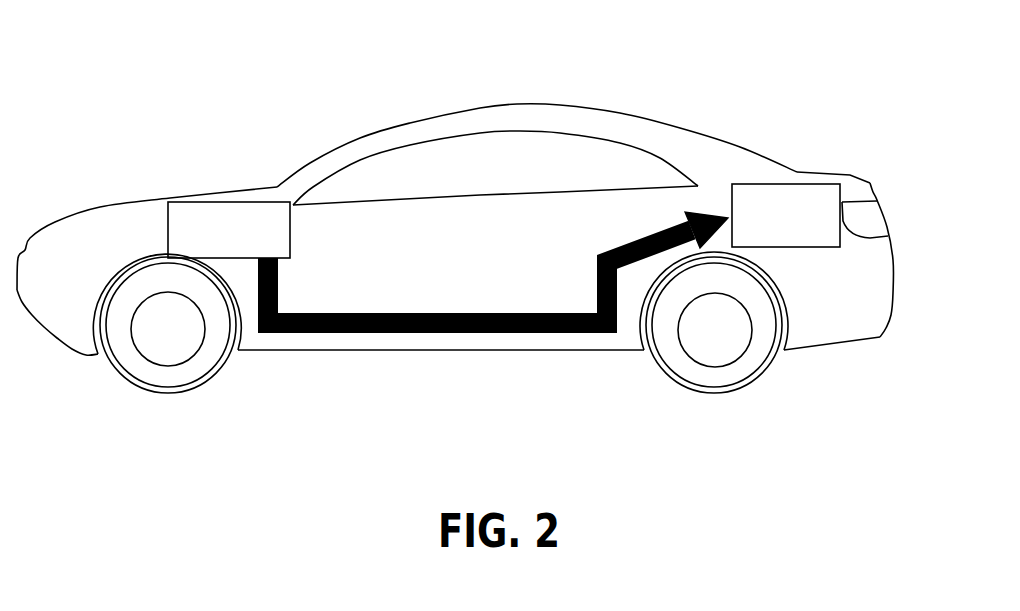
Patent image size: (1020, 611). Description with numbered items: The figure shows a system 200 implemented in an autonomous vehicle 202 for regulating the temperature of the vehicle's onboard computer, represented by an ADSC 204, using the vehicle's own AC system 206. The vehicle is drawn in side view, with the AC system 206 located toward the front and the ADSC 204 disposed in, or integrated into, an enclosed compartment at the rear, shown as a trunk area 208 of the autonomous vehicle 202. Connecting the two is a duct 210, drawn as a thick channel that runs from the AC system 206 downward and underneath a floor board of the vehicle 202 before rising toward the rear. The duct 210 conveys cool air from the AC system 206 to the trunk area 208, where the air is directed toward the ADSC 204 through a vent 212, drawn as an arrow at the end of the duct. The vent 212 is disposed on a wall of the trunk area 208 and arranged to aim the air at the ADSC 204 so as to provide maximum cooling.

The system 200 is at (109, 105).
The autonomous vehicle 202 is at (650, 120).
The ADSC 204 is at (769, 237).
The AC system 206 is at (213, 254).
The trunk area 208 is at (807, 267).
The duct 210 is at (390, 332).
The vent 212 is at (702, 209).